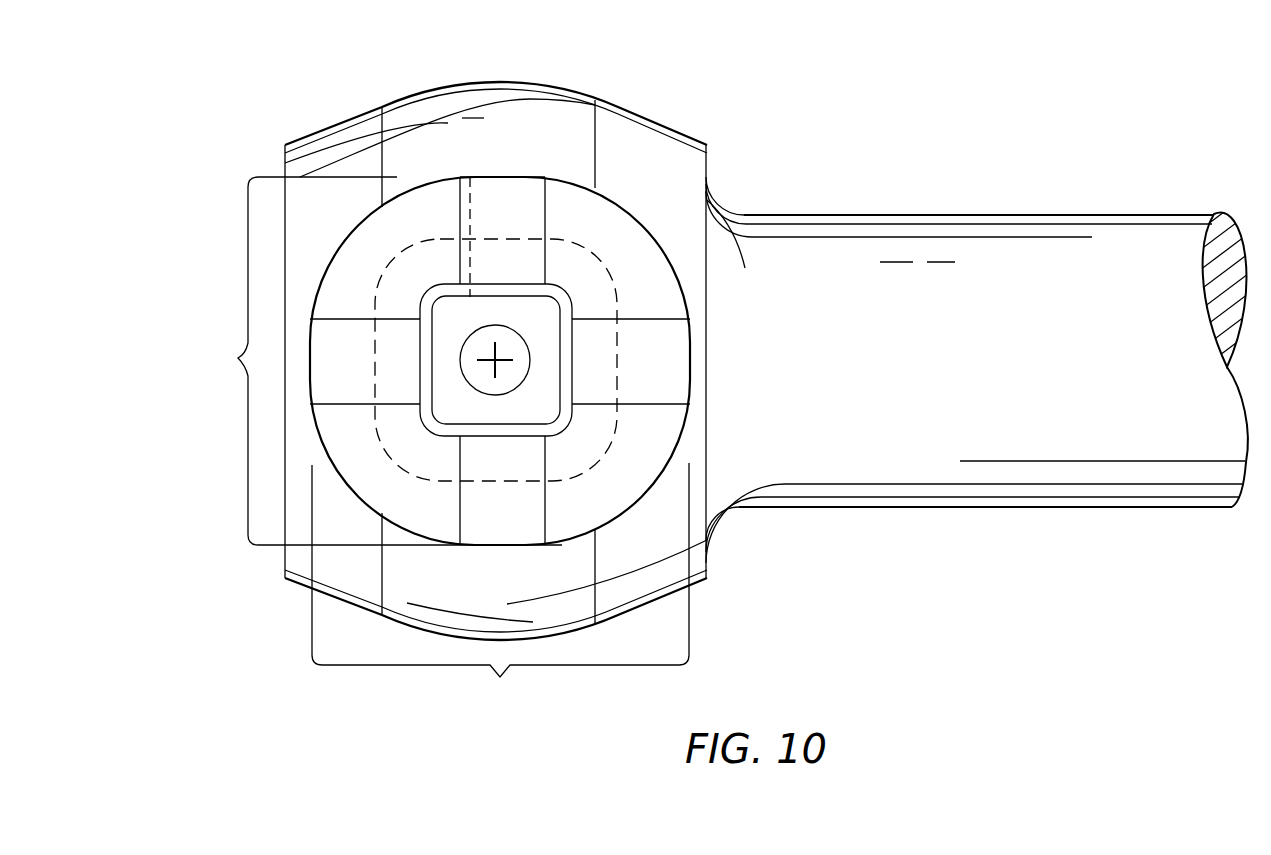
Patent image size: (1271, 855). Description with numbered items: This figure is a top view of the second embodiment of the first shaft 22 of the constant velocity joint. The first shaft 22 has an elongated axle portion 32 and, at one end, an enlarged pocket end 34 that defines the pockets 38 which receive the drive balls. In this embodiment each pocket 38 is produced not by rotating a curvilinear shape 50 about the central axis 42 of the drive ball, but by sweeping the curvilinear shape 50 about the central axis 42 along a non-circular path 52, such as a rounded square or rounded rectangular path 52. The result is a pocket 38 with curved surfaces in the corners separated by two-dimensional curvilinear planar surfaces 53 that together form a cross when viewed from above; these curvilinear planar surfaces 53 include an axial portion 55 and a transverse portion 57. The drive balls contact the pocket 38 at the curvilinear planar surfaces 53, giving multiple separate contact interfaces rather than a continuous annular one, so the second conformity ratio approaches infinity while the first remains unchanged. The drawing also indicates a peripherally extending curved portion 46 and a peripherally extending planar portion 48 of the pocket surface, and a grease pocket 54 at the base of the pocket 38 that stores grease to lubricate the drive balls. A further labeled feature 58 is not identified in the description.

The first shaft 22 is at (835, 100).
The axle portion 32 is at (977, 260).
The pocket end 34 is at (340, 172).
The pocket 38 is at (614, 510).
The central axis 42 is at (500, 352).
The peripherally extending curved portion 46 is at (362, 254).
The peripherally extending planar portion 48 is at (395, 294).
The curvilinear shape 50 is at (462, 232).
The non-circular path 52 is at (430, 483).
The curvilinear planar surface 53 is at (484, 222).
The grease pocket 54 is at (507, 370).
The axial portion 55 is at (655, 330).
The transverse portion 57 is at (515, 260).
The brackets 58 is at (237, 358).